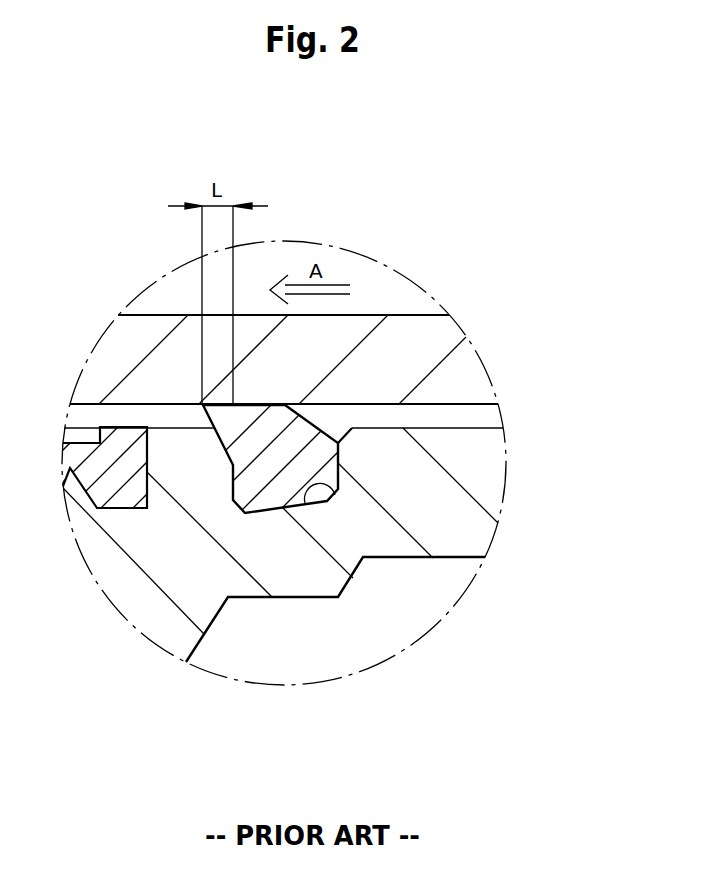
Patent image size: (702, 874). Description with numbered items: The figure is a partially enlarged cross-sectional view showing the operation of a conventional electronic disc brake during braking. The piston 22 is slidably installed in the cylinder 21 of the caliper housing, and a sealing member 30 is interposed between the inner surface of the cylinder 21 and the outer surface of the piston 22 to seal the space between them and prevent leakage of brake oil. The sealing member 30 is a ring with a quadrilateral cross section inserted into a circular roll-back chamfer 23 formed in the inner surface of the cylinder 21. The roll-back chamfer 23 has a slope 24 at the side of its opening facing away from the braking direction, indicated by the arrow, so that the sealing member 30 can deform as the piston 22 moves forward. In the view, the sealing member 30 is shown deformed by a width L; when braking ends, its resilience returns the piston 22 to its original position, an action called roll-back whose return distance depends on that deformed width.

The cylinder 21 is at (490, 487).
The piston 22 is at (475, 369).
The roll-back chamfer 23 is at (335, 495).
The slope 24 is at (228, 441).
The sealing member 30 is at (273, 485).